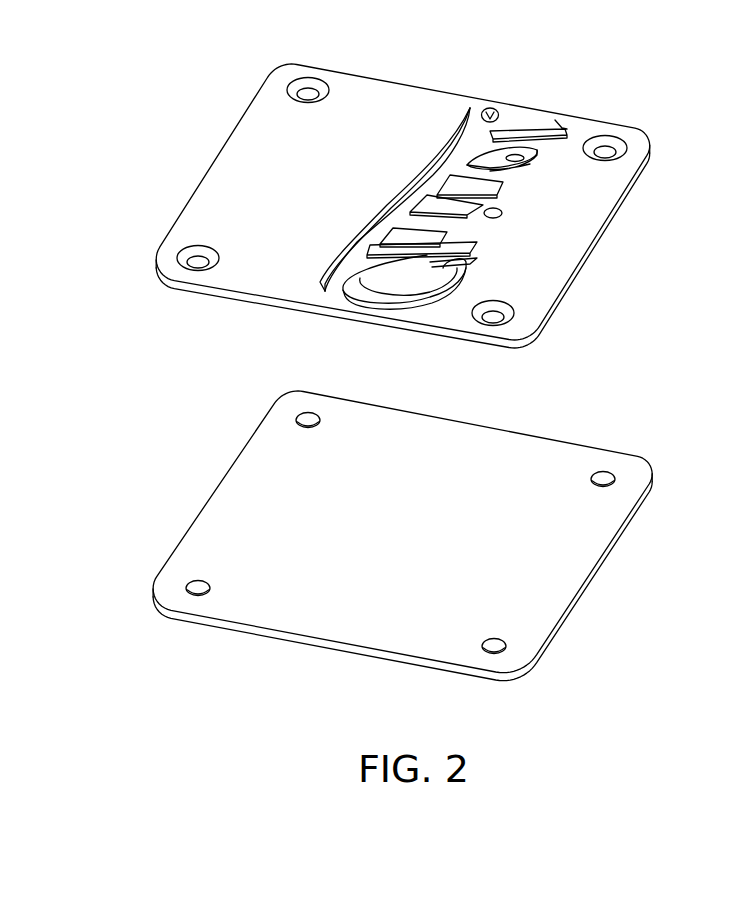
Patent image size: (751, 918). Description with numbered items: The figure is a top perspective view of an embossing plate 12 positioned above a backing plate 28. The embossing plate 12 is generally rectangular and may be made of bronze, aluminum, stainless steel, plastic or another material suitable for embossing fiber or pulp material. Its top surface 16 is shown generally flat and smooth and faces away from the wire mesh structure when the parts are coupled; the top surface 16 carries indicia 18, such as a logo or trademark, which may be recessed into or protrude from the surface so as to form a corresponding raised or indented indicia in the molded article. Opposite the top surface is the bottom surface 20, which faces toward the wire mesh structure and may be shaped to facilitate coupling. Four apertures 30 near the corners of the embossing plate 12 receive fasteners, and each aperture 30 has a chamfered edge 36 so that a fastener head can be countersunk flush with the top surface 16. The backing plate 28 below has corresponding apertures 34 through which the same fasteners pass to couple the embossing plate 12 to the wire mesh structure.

The embossing plate 12 is at (432, 226).
The top surface 16 is at (213, 181).
The indicia 18 is at (420, 215).
The bottom surface 20 is at (194, 300).
The backing plate 28 is at (448, 536).
The apertures 30 is at (602, 153).
The apertures 34 is at (604, 482).
The chamfered edge 36 is at (203, 252).